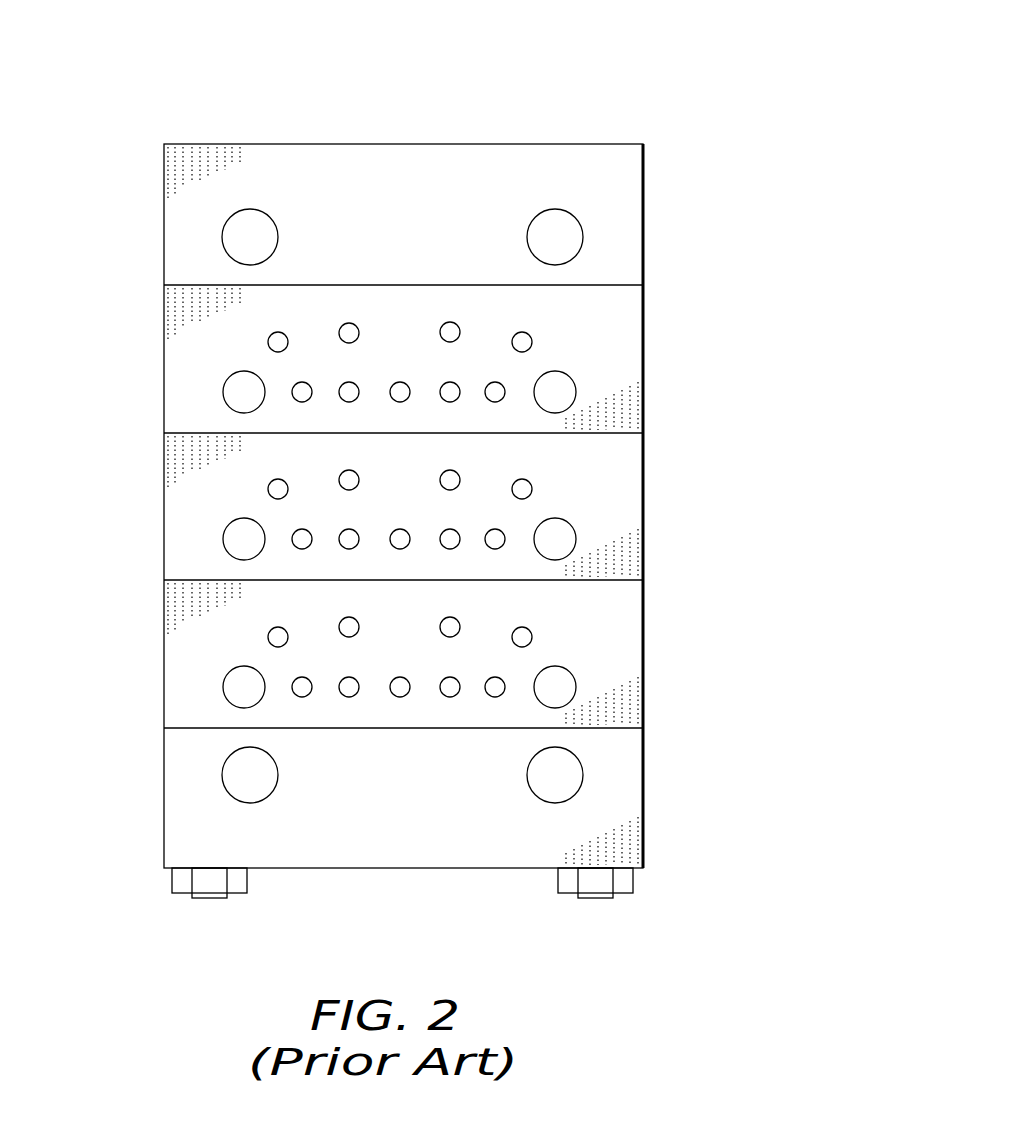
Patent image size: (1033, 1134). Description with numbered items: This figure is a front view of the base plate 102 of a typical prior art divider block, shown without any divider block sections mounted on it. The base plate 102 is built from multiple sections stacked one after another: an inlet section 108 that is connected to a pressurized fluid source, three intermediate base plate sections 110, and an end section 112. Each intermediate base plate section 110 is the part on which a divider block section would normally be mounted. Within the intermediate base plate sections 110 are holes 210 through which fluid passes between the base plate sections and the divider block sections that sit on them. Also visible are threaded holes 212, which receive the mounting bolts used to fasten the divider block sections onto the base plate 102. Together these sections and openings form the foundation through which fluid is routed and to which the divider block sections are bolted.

The base plate 102 is at (656, 44).
The inlet section 108 is at (643, 208).
The intermediate base plate section 110 is at (643, 358).
The end section 112 is at (643, 843).
The holes 210 is at (307, 382).
The threaded holes 212 is at (223, 391).